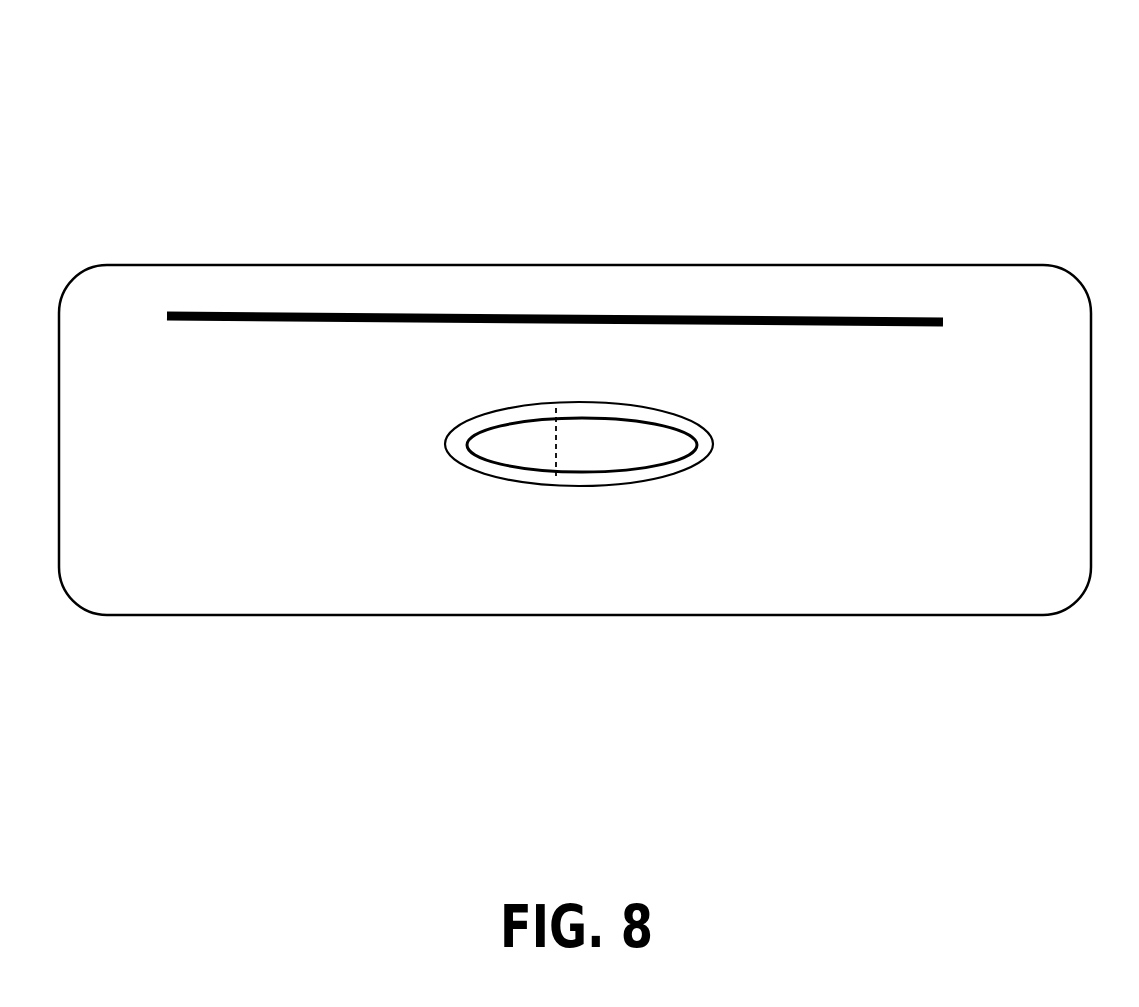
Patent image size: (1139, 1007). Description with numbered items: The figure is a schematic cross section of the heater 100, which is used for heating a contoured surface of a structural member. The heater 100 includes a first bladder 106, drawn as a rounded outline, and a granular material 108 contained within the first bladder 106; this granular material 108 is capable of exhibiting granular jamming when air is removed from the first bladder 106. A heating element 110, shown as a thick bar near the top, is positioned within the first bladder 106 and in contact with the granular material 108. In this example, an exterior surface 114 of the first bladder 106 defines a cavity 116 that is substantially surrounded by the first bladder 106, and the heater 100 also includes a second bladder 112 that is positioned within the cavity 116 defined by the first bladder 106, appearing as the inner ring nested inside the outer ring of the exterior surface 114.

The heater 100 is at (1018, 88).
The first bladder 106 is at (968, 265).
The granular material 108 is at (966, 436).
The heating element 110 is at (598, 314).
The second bladder 112 is at (675, 428).
The exterior surface 114 is at (612, 403).
The cavity 116 is at (555, 444).